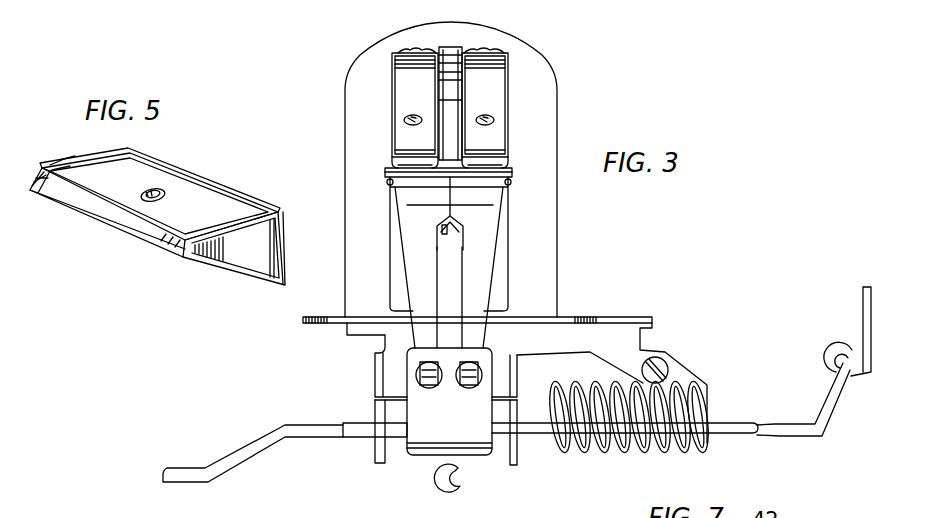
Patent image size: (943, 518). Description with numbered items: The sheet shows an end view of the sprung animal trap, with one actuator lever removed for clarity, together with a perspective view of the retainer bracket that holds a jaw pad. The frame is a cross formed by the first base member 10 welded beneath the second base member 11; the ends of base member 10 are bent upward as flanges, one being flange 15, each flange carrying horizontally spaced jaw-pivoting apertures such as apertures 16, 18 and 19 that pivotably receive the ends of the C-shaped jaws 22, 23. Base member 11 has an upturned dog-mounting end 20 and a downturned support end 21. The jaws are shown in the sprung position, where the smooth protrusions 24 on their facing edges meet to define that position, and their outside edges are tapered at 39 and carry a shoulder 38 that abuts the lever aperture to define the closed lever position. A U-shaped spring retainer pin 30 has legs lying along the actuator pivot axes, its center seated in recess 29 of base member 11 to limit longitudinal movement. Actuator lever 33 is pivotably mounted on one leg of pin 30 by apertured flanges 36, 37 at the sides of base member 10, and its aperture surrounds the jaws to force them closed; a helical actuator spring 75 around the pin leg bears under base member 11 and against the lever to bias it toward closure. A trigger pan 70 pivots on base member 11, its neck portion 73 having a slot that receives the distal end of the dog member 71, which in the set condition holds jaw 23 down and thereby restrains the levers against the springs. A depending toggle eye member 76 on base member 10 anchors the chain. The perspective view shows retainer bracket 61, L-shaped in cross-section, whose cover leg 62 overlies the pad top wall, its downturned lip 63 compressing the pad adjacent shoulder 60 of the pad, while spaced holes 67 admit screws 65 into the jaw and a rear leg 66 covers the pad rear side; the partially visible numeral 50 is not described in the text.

In FIG. 3, the first base member 10 is at (418, 457).
In FIG. 3, the second base member 11 is at (312, 437).
In FIG. 3, the flange 15 is at (482, 421).
In FIG. 3, the jaw-pivoting aperture 16 is at (454, 5).
In FIG. 3, the jaw-pivoting aperture 18 is at (470, 385).
In FIG. 3, the jaw-pivoting aperture 19 is at (428, 388).
In FIG. 3, the dog-mounting end 20 is at (835, 407).
In FIG. 3, the support end 21 is at (222, 460).
In FIG. 3, the jaw 22 is at (410, 275).
In FIG. 3, the jaw 23 is at (478, 272).
In FIG. 3, the protrusions 24 is at (437, 244).
In FIG. 3, the recess 29 is at (713, 437).
In FIG. 3, the spring retainer pin 30 is at (735, 420).
In FIG. 3, the actuator lever 33 is at (543, 100).
In FIG. 3, the flange 36 is at (375, 458).
In FIG. 3, the flange 37 is at (515, 465).
In FIG. 3, the shoulder 38 is at (385, 172).
In FIG. 3, the tapered edge 39 is at (407, 292).
In FIG. 3, the upper element 50 is at (288, 5).
In FIG. 3, the shoulder 60 is at (437, 47).
In FIG. 5, the retainer bracket 61 is at (178, 165).
In FIG. 5, the cover leg 62 is at (75, 163).
In FIG. 5, the lip 63 is at (118, 215).
In FIG. 3, the screws 65 is at (408, 50).
In FIG. 5, the rear leg 66 is at (245, 262).
In FIG. 5, the holes 67 is at (165, 193).
In FIG. 3, the trigger pan 70 is at (313, 325).
In FIG. 3, the dog member 71 is at (862, 303).
In FIG. 3, the neck portion 73 is at (655, 322).
In FIG. 3, the actuator spring 75 is at (610, 458).
In FIG. 3, the toggle eye member 76 is at (462, 488).